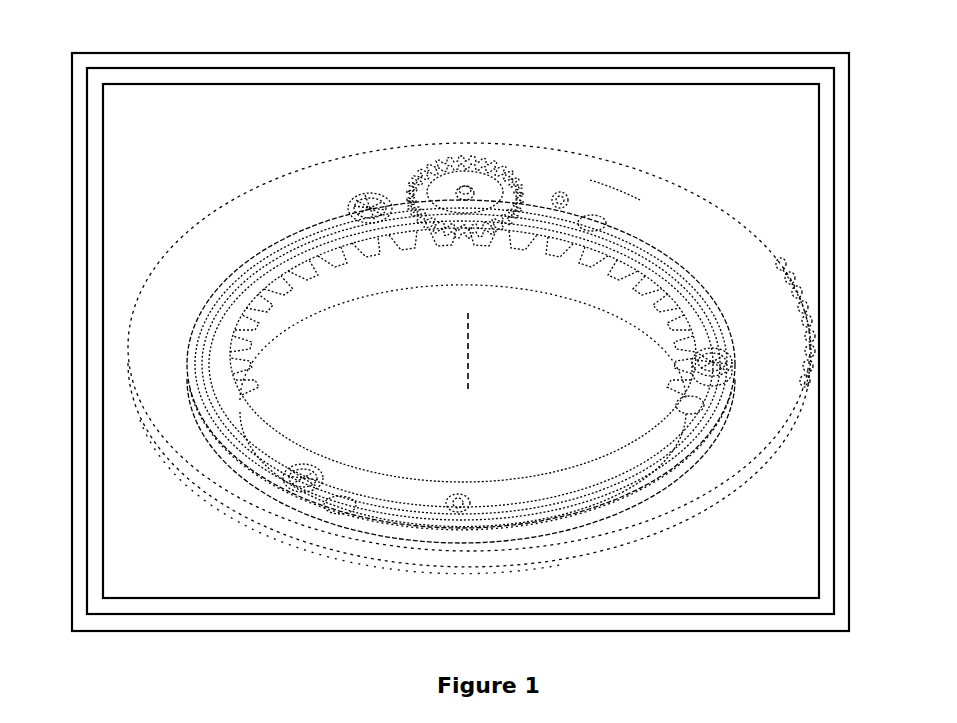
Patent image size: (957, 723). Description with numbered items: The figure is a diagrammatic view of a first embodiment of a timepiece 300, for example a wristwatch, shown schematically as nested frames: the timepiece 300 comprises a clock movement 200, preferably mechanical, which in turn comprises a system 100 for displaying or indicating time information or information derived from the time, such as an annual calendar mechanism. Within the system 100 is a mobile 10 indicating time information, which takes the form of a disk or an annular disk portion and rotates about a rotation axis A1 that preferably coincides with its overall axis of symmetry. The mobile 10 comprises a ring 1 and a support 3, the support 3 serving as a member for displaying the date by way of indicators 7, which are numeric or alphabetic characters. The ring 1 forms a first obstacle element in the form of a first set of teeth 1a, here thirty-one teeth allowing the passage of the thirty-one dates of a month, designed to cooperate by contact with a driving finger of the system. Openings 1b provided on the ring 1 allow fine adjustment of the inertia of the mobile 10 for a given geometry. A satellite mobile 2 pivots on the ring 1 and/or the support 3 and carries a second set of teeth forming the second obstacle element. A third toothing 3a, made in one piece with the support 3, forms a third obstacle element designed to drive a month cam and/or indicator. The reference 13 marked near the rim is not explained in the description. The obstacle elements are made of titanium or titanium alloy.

The system for displaying or indicating time information 100 is at (312, 82).
The clock movement 200 is at (362, 67).
The timepiece 300 is at (418, 52).
The mobile 10 is at (232, 188).
The support 3 is at (203, 262).
The third toothing 3a is at (775, 262).
The ring 1 is at (680, 280).
The first set of teeth 1a is at (585, 266).
The openings 1b is at (680, 442).
The satellite mobile 2 is at (480, 188).
The indicators 7 is at (602, 172).
The sensor 13 is at (604, 180).
The rotation axis A1 is at (466, 355).